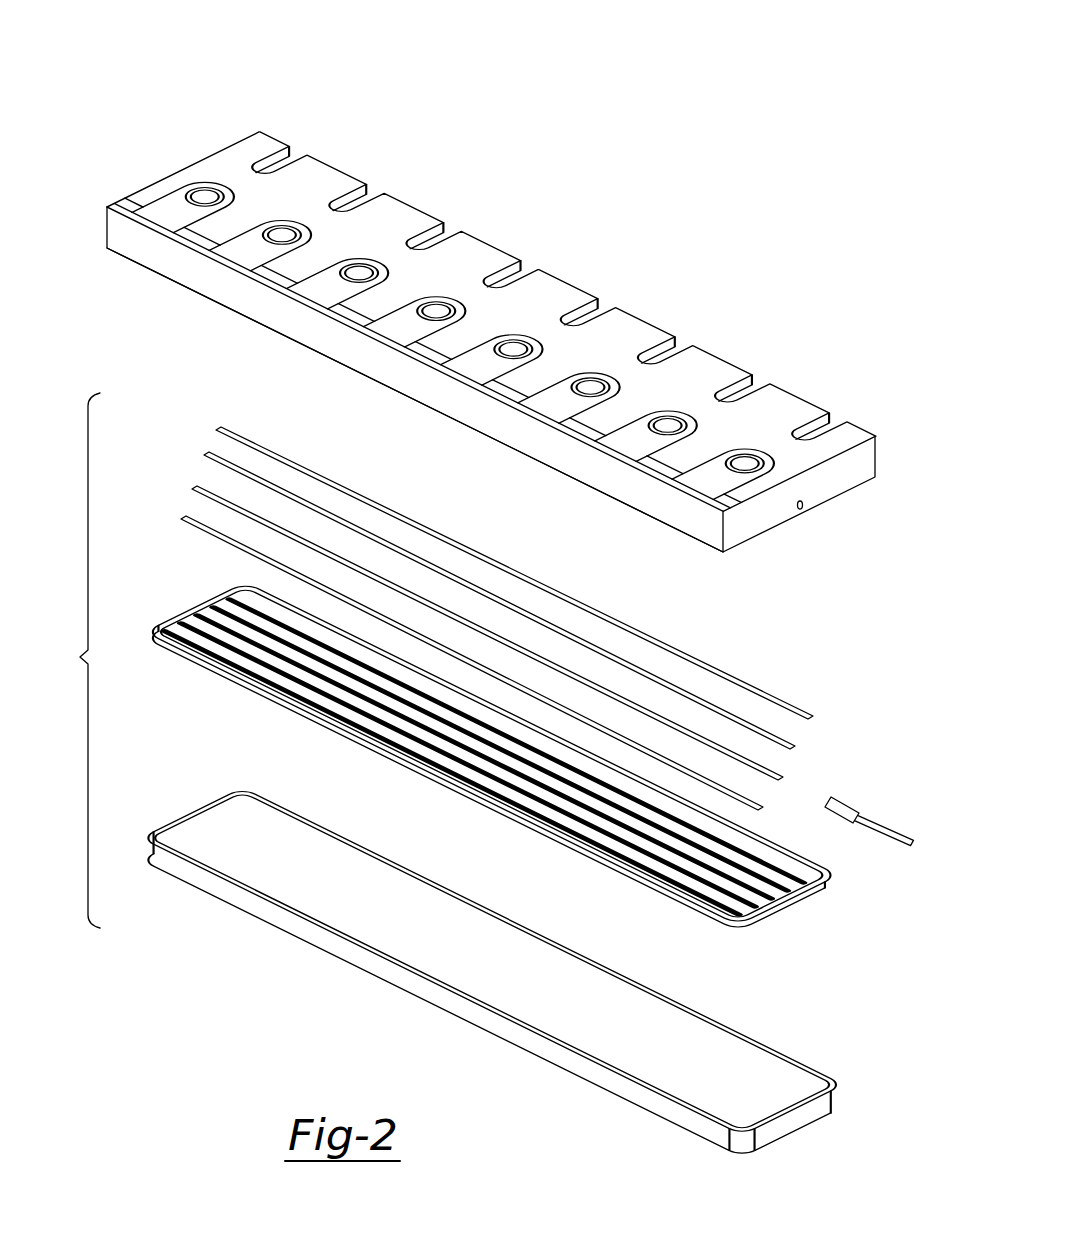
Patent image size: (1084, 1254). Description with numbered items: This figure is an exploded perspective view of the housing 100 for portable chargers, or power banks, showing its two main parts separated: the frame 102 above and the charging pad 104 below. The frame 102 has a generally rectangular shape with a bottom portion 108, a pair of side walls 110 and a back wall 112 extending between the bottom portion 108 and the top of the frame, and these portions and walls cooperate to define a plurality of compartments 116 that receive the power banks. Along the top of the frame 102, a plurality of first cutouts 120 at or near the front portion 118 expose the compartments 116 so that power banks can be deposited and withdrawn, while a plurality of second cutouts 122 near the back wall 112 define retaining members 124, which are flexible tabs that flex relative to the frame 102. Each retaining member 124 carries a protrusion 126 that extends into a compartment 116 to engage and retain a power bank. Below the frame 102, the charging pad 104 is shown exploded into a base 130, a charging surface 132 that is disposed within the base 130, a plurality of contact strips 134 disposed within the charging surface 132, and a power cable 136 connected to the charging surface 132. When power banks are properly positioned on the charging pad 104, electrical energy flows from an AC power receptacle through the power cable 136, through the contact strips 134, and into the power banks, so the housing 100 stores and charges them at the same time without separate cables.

The housing 100 is at (498, 599).
The frame 102 is at (511, 325).
The charging pad 104 is at (498, 775).
The bottom portion 108 is at (878, 440).
The side walls 110 is at (257, 130).
The back wall 112 is at (692, 527).
The compartments 116 is at (282, 158).
The front portion 118 is at (570, 208).
The first cutouts 120 is at (298, 150).
The second cutouts 122 is at (265, 222).
The retaining members 124 is at (167, 213).
The protrusions 126 is at (203, 195).
The base 130 is at (205, 818).
The charging surface 132 is at (200, 607).
The contact strips 134 is at (217, 428).
The power cable 136 is at (887, 825).